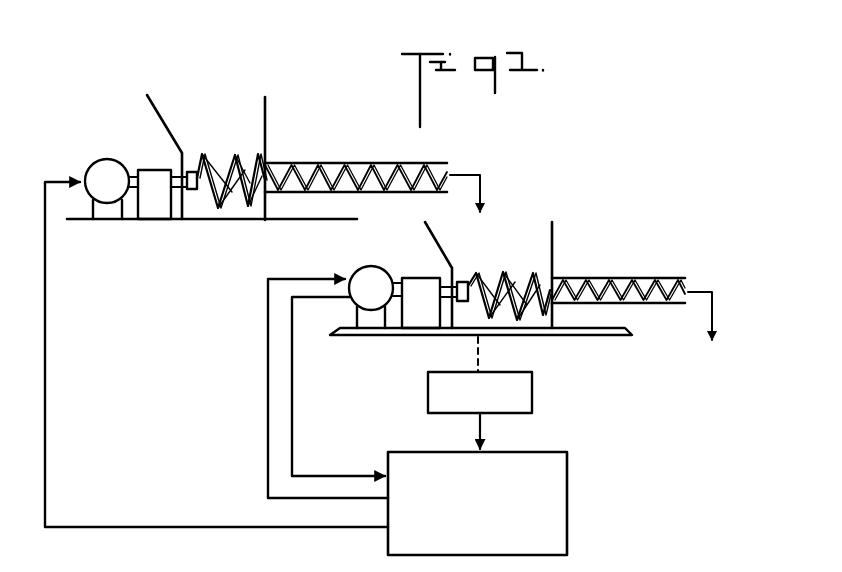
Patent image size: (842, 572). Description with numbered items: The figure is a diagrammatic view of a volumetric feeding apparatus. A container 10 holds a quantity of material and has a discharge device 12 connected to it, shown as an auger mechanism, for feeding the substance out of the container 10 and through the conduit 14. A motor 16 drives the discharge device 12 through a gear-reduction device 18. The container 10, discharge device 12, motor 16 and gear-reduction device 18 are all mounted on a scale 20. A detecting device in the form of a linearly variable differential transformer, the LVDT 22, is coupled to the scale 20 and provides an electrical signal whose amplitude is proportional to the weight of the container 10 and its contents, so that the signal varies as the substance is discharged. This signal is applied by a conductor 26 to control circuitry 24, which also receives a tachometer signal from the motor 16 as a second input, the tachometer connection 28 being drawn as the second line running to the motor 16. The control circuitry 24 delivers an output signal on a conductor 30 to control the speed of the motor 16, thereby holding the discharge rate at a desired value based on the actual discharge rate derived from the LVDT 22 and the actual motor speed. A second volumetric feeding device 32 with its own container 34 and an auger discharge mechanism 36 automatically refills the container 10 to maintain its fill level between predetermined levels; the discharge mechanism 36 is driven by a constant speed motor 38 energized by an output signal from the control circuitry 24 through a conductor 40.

The container 10 is at (552, 238).
The discharge device 12 is at (506, 255).
The conduit 14 is at (653, 278).
The motor 16 is at (357, 270).
The gear-reduction device 18 is at (420, 278).
The scale 20 is at (613, 332).
The linearly variable differential transformer (LVDT) 22 is at (532, 405).
The control circuitry 24 is at (567, 473).
The conductor 26 is at (482, 432).
The control line to motor 28 is at (377, 472).
The conductor 30 is at (268, 425).
The second volumetric feeding device 32 is at (296, 97).
The container 34 is at (161, 120).
The auger discharge mechanism 36 is at (220, 130).
The constant speed motor 38 is at (93, 196).
The conductor 40 is at (175, 525).